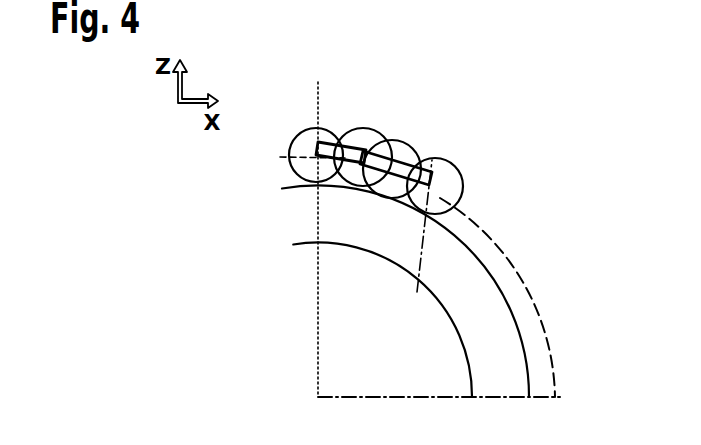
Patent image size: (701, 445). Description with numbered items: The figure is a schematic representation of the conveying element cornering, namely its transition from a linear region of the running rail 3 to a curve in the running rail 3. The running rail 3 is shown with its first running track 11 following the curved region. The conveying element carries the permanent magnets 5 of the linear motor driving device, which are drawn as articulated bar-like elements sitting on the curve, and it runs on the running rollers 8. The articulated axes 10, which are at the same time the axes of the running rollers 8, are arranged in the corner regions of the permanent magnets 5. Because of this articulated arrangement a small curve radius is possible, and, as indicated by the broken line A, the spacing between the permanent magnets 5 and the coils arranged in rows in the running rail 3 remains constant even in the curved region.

The running rail 3 is at (465, 340).
The permanent magnets 5 is at (362, 128).
The running rollers 8 is at (287, 175).
The articulated axes 10 is at (356, 225).
The first running track 11 is at (492, 248).
The broken line A is at (536, 268).